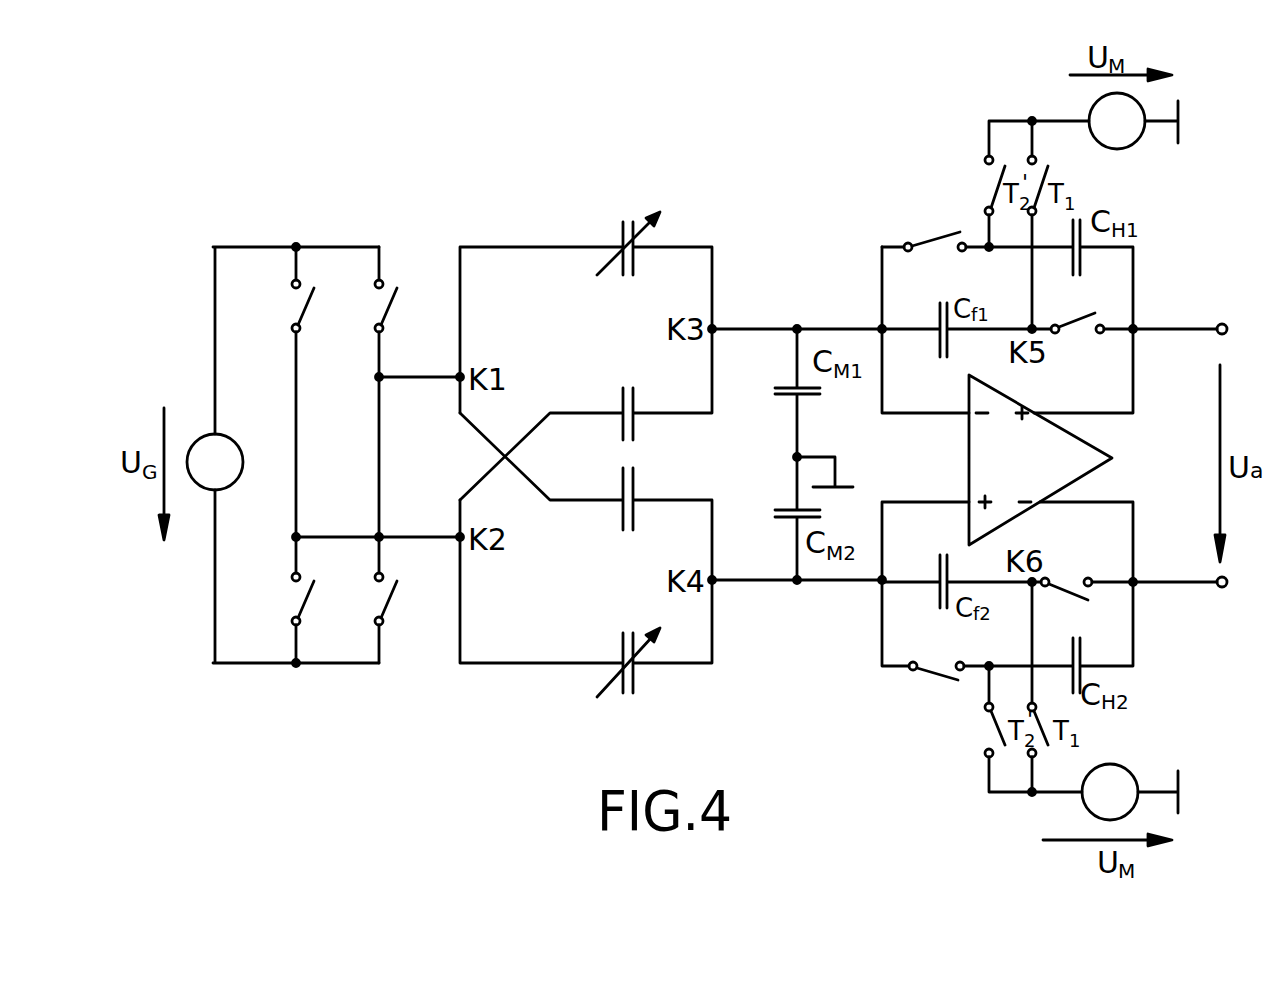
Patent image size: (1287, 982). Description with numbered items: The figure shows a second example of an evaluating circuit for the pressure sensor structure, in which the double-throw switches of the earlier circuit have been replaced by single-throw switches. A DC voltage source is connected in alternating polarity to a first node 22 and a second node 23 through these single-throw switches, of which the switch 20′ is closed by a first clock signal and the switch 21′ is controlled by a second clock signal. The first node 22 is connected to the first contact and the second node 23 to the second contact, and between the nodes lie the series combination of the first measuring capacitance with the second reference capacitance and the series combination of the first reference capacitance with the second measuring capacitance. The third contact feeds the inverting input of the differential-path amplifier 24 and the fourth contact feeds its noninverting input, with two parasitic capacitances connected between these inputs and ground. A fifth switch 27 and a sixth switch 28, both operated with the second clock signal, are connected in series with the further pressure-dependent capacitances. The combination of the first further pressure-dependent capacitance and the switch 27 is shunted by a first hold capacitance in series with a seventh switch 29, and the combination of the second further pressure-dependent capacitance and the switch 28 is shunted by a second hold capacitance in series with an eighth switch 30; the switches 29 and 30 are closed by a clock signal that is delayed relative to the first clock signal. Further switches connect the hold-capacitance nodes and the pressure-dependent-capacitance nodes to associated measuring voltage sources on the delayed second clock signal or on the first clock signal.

The single-throw switch 20′ is at (297, 320).
The single-throw switch 21′ is at (300, 603).
The first node 22 is at (460, 268).
The second node 23 is at (460, 620).
The differential-path amplifier 24 is at (1095, 478).
The fifth switch 27 is at (1080, 332).
The sixth switch 28 is at (1078, 578).
The seventh switch 29 is at (942, 237).
The eighth switch 30 is at (942, 678).